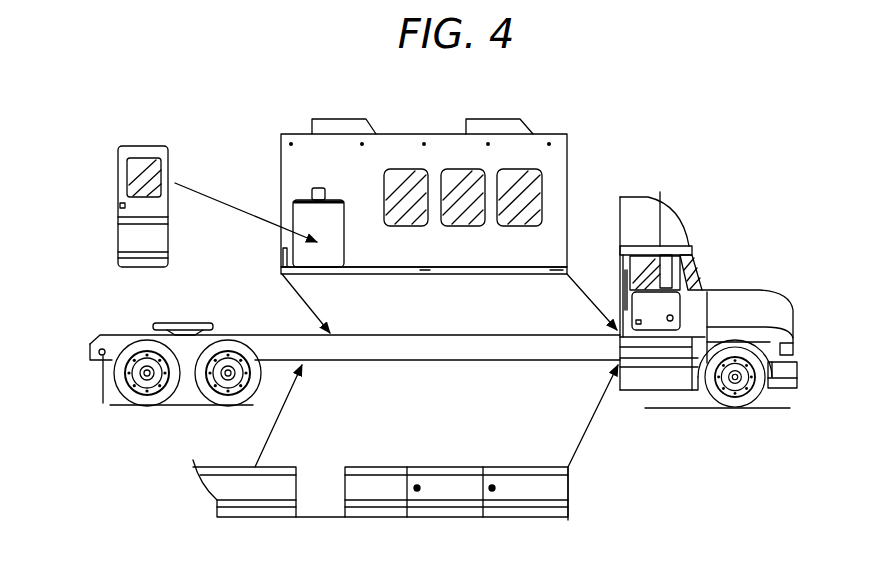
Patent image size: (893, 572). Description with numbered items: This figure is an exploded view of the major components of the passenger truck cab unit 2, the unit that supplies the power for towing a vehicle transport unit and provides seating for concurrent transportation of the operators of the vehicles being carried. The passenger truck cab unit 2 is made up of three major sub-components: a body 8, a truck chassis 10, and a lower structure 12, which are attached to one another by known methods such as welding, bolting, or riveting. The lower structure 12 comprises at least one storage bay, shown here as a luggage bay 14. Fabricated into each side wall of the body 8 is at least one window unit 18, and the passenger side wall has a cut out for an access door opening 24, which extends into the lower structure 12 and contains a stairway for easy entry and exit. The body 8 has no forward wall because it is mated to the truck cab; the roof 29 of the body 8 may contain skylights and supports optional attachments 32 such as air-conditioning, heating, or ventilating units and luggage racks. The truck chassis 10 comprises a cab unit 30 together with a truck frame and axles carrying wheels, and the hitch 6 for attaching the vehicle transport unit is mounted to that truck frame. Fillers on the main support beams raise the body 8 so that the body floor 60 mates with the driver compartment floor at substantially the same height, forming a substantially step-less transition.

The passenger truck cab unit 2 is at (668, 123).
The hitch 6 is at (181, 322).
The body 8 is at (413, 110).
The truck chassis 10 is at (713, 253).
The lower structure 12 is at (573, 495).
The luggage bay 14 is at (443, 493).
The window unit 18 is at (527, 192).
The access door opening 24 is at (320, 255).
The roof 29 is at (444, 134).
The cab unit 30 is at (620, 260).
The optional attachments 32 is at (337, 118).
The body floor 60 is at (468, 275).